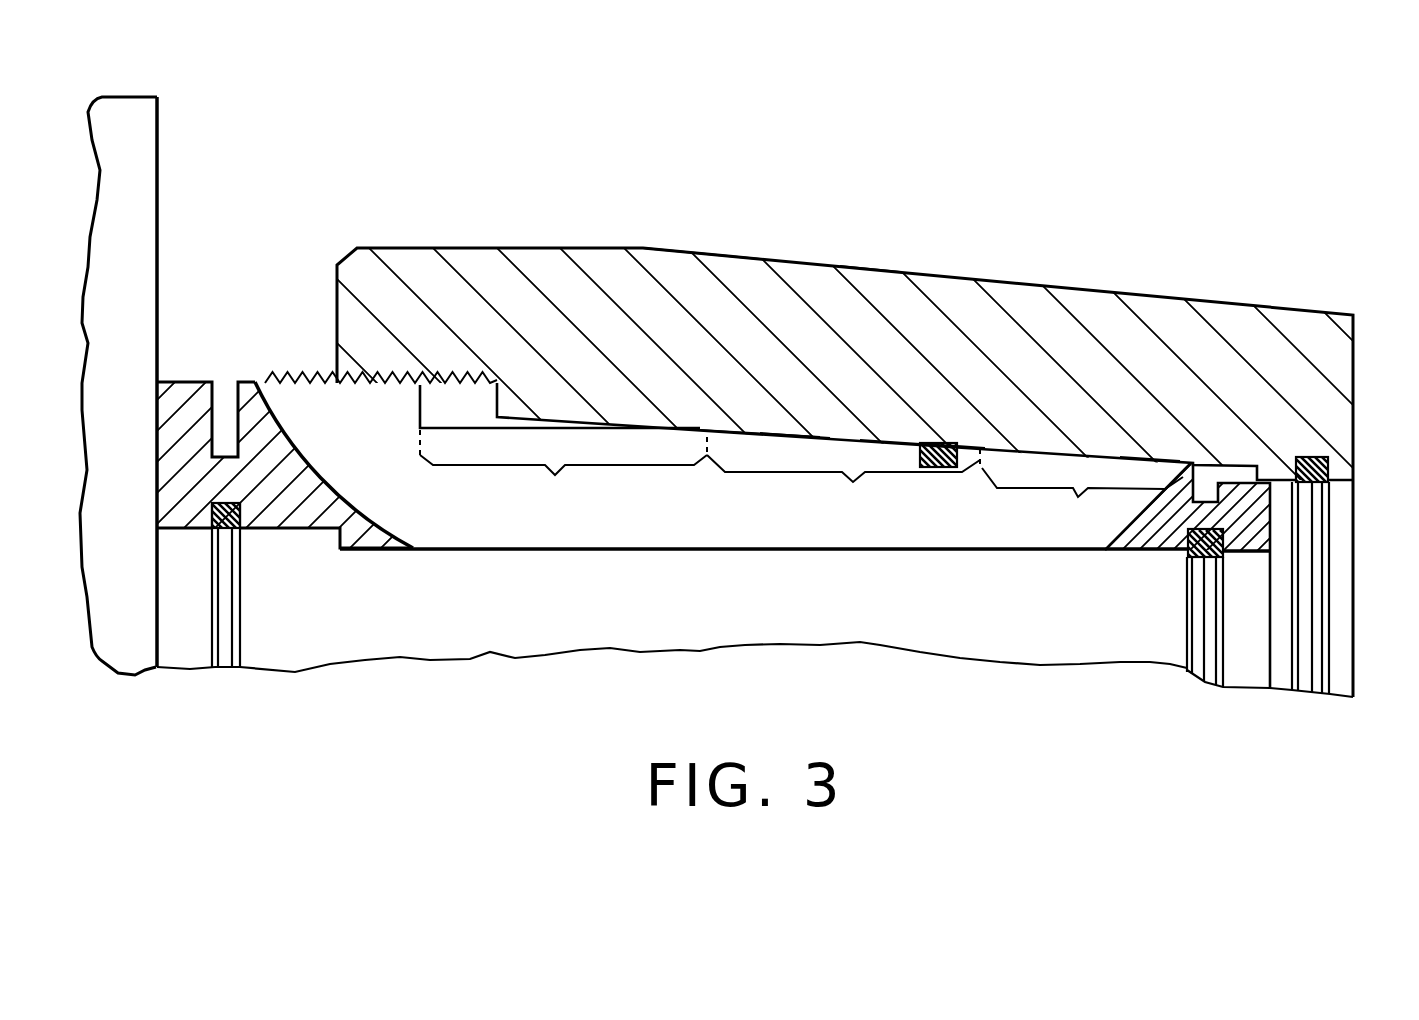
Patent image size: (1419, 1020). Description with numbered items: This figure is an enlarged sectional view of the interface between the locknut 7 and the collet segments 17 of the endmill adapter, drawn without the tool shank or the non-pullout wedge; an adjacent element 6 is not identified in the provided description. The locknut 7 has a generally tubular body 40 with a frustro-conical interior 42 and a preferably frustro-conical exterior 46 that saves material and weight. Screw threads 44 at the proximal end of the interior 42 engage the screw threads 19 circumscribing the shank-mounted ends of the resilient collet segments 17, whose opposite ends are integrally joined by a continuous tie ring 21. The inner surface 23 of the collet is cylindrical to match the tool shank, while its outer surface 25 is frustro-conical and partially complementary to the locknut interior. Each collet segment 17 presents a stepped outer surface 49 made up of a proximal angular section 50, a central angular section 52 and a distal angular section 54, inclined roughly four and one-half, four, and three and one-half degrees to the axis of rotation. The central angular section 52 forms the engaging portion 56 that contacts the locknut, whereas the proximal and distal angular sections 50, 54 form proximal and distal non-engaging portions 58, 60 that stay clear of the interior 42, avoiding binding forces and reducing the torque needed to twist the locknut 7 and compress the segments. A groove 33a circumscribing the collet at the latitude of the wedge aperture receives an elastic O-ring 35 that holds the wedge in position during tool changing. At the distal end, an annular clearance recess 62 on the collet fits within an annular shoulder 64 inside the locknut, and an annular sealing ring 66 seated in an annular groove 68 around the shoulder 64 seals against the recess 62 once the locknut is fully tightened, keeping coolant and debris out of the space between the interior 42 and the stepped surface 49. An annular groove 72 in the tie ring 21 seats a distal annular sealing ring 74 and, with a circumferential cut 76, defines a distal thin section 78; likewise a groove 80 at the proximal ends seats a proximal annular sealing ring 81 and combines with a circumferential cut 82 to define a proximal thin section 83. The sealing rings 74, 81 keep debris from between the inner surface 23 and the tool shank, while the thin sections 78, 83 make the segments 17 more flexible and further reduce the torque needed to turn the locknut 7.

The wall 6 is at (143, 130).
The locknut 7 is at (862, 245).
The resilient collet segments 17 is at (705, 532).
The screw threads 19 is at (296, 372).
The tie ring 21 is at (1138, 527).
The inner surface 23 is at (792, 549).
The outer surface 25 is at (895, 443).
The groove 33a is at (946, 448).
The elastic O-ring 35 is at (932, 470).
The tubular body 40 is at (893, 361).
The frustro-conical interior 42 is at (788, 440).
The screw threads 44 is at (462, 383).
The exterior 46 is at (702, 257).
The stepped outer surface 49 is at (757, 425).
The proximal angular section 50 is at (563, 472).
The central angular section 52 is at (843, 484).
The distal angular section 54 is at (1082, 500).
The engaging portion 56 is at (945, 442).
The proximal non-engaging portion 58 is at (574, 425).
The distal non-engaging portion 60 is at (1164, 455).
The annular clearance recess 62 is at (1290, 460).
The annular shoulder 64 is at (1290, 503).
The annular sealing ring 66 is at (1303, 460).
The annular groove 68 is at (1313, 460).
The annular groove 72 is at (1270, 538).
The distal annular sealing ring 74 is at (1208, 605).
The circumferential cut 76 is at (1212, 467).
The distal thin section 78 is at (1188, 530).
The groove 80 is at (222, 535).
The proximal annular sealing ring 81 is at (230, 625).
The circumferential cut 82 is at (208, 380).
The proximal thin section 83 is at (227, 478).